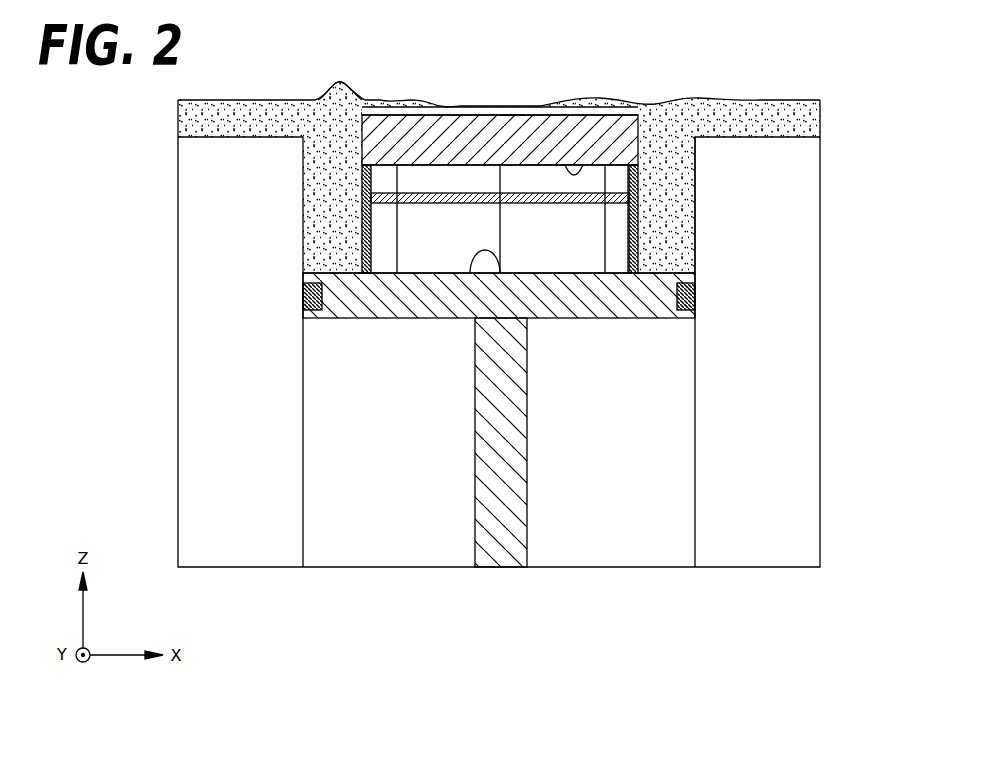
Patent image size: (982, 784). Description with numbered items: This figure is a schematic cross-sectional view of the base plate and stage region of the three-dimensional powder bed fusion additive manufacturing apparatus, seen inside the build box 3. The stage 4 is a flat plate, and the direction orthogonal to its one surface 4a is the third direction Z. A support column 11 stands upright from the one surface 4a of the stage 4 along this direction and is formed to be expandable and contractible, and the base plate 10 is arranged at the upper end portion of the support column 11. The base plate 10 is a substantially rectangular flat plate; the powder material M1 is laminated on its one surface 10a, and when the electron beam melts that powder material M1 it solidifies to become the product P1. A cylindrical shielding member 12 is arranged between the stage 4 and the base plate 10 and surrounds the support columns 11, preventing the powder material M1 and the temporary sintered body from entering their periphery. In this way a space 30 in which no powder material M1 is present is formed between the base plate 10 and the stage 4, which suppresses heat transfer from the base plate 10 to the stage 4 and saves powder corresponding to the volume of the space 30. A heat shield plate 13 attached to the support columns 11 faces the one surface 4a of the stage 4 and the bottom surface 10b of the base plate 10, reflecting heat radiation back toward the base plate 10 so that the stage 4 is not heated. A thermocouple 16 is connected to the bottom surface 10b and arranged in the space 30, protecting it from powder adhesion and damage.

The build box 3 is at (803, 372).
The stage 4 is at (625, 290).
The one surface of the stage 4a is at (695, 248).
The base plate 10 is at (410, 125).
The one surface of the base plate 10a is at (467, 110).
The bottom surface of the base plate 10b is at (574, 176).
The support column 11 is at (614, 172).
The shielding member 12 is at (340, 140).
The heat shield plate 13 is at (420, 205).
The thermocouple 16 is at (470, 273).
The space 30 is at (575, 247).
The powder material M1 is at (677, 107).
The product P1 is at (512, 107).